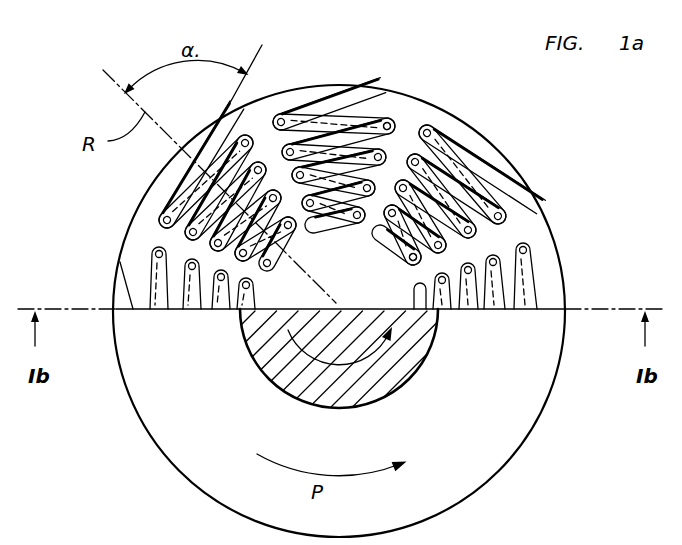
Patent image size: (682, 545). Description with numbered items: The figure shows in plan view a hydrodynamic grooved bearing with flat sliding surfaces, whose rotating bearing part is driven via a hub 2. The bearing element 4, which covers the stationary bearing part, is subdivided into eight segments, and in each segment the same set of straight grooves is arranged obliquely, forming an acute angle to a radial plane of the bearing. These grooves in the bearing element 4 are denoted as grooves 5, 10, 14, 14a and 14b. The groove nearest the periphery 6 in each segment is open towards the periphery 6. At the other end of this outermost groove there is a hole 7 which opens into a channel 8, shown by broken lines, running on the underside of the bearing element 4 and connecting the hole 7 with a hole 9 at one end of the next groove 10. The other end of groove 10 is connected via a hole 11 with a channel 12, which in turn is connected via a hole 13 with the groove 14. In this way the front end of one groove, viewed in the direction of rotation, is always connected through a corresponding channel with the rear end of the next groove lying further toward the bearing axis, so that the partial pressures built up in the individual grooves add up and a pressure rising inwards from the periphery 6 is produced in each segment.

The hub 2 is at (376, 383).
The bearing element 4 is at (259, 124).
The groove 5 is at (507, 183).
The periphery 6 is at (489, 220).
The hole 7 is at (428, 130).
The channel 8 is at (473, 172).
The hole 9 is at (497, 210).
The groove 10 is at (480, 230).
The hole 11 is at (413, 158).
The channel 12 is at (485, 198).
The hole 13 is at (478, 240).
The groove 14 is at (454, 240).
The groove 14a is at (430, 256).
The groove 14b is at (385, 256).